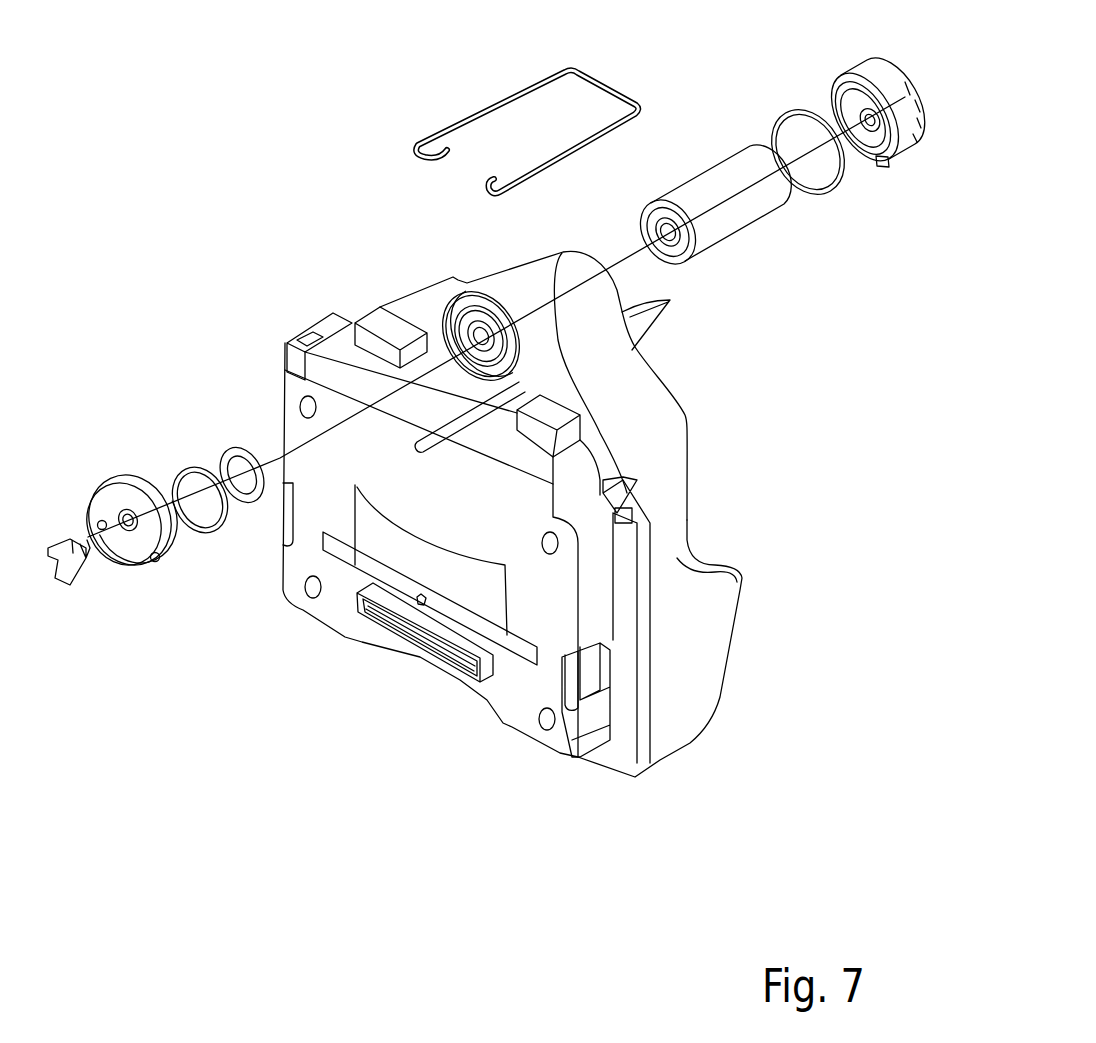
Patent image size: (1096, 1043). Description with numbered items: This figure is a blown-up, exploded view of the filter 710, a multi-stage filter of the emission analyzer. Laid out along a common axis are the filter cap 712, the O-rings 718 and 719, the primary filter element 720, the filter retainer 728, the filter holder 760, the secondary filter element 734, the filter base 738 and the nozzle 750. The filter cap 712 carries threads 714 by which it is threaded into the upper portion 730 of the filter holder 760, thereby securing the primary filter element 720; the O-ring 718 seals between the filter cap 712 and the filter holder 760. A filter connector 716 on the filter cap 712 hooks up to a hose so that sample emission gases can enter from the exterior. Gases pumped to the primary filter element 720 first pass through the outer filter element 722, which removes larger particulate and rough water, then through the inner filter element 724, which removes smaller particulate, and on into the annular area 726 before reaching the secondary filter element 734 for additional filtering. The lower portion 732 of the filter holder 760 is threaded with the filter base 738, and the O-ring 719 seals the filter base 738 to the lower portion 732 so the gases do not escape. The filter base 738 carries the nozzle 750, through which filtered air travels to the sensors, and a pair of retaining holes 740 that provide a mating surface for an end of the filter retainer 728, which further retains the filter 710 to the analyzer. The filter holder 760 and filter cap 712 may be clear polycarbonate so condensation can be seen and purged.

The filter 710 is at (772, 300).
The filter cap 712 is at (907, 82).
The threads 714 is at (857, 72).
The filter connector 716 is at (882, 167).
The O-ring 718 is at (793, 113).
The primary filter element 720 is at (705, 178).
The outer filter element 722 is at (650, 202).
The inner filter element 724 is at (690, 258).
The annular area 726 is at (697, 240).
The filter retainer 728 is at (498, 102).
The upper portion 730 is at (571, 250).
The lower portion 732 is at (494, 288).
The secondary filter element 734 is at (230, 450).
The filter base 738 is at (117, 493).
The retaining holes 740 is at (153, 583).
The O-ring 719 is at (178, 470).
The nozzle 750 is at (68, 545).
The filter holder 760 is at (637, 348).